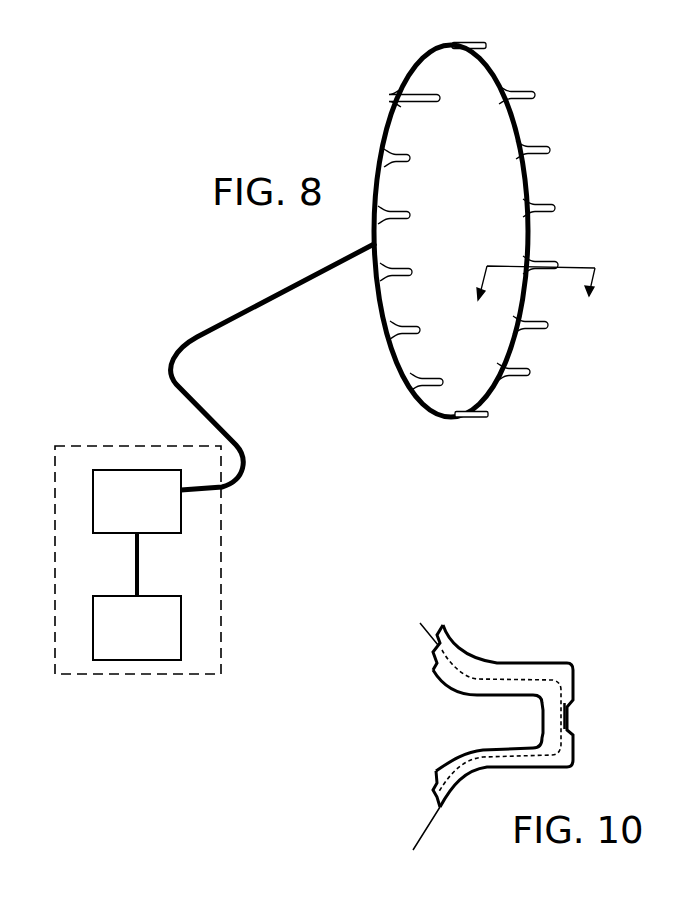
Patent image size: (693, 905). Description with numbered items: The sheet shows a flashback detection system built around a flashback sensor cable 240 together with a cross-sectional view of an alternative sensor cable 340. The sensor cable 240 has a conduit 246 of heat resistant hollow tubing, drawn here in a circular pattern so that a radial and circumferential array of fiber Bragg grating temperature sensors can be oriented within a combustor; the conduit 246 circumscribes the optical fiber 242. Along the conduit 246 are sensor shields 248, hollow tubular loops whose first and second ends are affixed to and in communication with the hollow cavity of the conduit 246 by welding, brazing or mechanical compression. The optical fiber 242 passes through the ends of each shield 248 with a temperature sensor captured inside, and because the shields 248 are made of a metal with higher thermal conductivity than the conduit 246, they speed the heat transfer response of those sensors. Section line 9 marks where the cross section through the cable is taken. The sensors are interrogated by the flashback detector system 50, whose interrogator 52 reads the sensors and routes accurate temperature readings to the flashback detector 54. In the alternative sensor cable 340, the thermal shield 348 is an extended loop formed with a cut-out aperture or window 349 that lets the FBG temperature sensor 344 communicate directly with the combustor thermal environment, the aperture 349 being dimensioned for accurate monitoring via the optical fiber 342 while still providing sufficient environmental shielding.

In FIG. 8, the flashback sensor cable 240 is at (384, 66).
In FIG. 8, the sensor shields 248 is at (412, 214).
In FIG. 8, the conduit 246 is at (489, 393).
In FIG. 8, the optical fiber 242 is at (207, 403).
In FIG. 8, the section line 9- 9 is at (533, 300).
In FIG. 8, the flashback detector system 50 is at (246, 556).
In FIG. 8, the interrogator 52 is at (103, 497).
In FIG. 8, the flashback detector 54 is at (165, 627).
In FIG. 10, the flashback sensor cable 340 is at (401, 733).
In FIG. 10, the optical fiber 342 is at (418, 824).
In FIG. 10, the FBG temperature sensor 344 is at (567, 712).
In FIG. 10, the thermal shield 348 is at (473, 672).
In FIG. 10, the aperture or window 349 is at (568, 728).